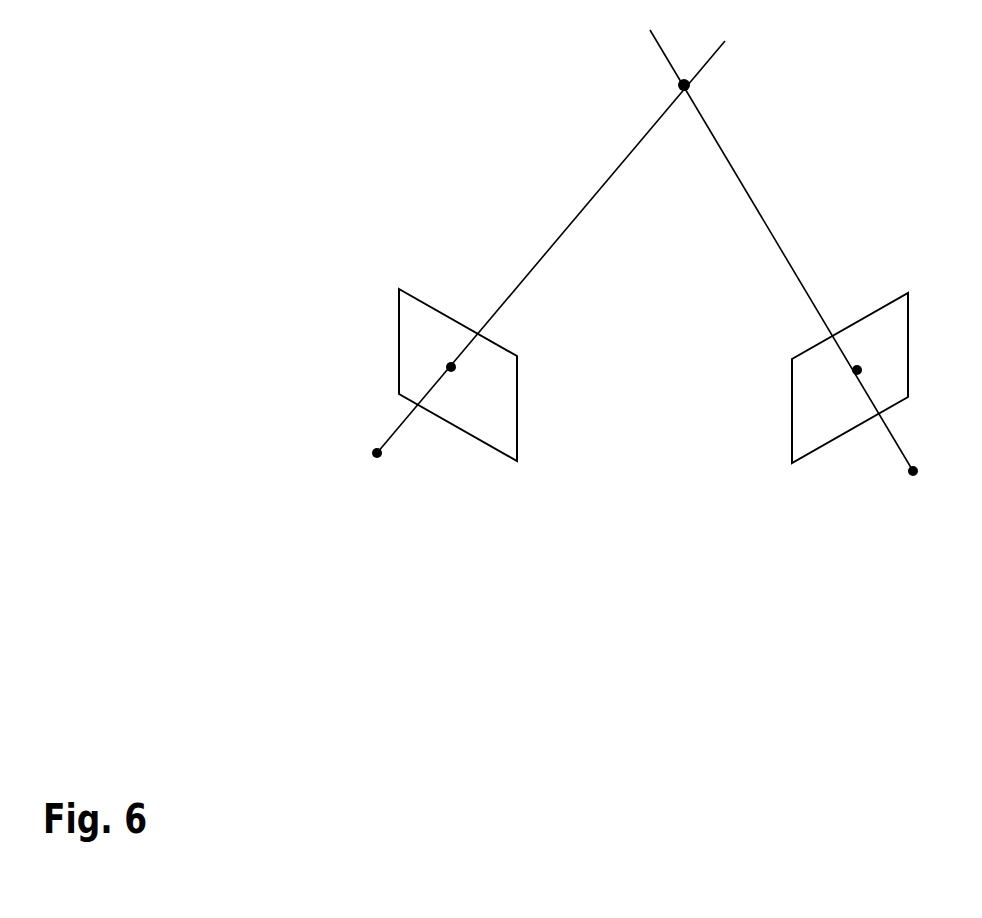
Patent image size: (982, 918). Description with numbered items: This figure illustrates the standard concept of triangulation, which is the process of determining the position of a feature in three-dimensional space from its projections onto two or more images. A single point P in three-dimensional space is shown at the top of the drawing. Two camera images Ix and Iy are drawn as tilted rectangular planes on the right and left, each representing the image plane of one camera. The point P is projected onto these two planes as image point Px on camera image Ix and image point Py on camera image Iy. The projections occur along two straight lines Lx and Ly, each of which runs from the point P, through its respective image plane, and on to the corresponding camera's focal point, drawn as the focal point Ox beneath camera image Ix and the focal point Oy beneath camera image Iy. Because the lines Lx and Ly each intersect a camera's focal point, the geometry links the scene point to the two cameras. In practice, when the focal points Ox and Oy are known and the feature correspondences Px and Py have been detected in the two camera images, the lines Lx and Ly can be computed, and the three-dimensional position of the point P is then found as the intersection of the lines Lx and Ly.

The 3D point P is at (683, 105).
The line Lx is at (781, 250).
The line Ly is at (551, 247).
The camera image Ix is at (869, 378).
The camera image Iy is at (441, 375).
The image point Px is at (842, 377).
The image point Py is at (467, 378).
The focal point Ox is at (936, 481).
The focal point Oy is at (354, 463).